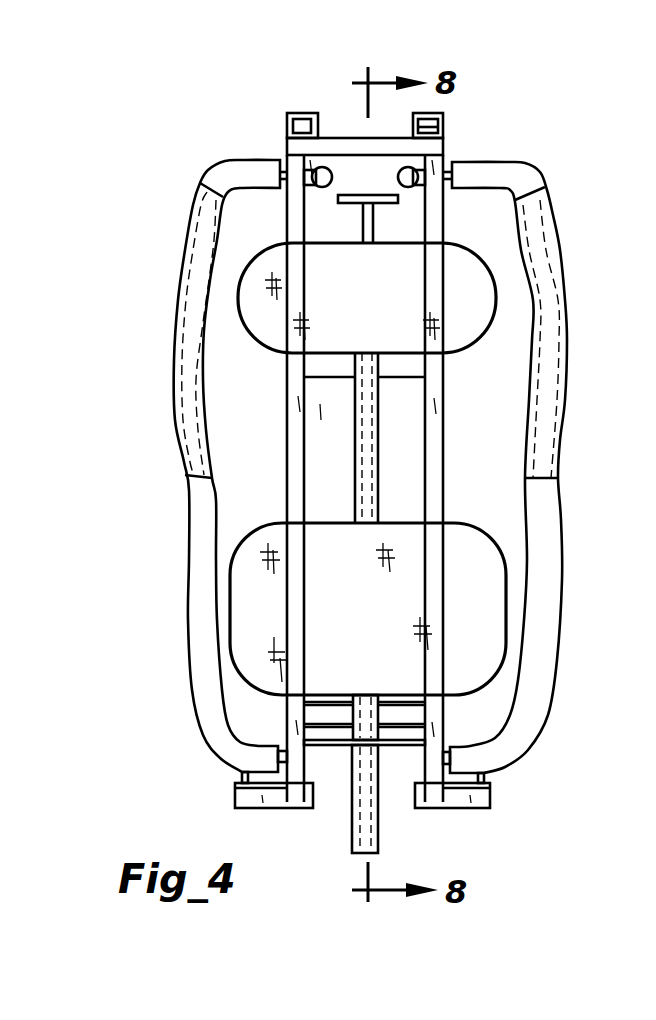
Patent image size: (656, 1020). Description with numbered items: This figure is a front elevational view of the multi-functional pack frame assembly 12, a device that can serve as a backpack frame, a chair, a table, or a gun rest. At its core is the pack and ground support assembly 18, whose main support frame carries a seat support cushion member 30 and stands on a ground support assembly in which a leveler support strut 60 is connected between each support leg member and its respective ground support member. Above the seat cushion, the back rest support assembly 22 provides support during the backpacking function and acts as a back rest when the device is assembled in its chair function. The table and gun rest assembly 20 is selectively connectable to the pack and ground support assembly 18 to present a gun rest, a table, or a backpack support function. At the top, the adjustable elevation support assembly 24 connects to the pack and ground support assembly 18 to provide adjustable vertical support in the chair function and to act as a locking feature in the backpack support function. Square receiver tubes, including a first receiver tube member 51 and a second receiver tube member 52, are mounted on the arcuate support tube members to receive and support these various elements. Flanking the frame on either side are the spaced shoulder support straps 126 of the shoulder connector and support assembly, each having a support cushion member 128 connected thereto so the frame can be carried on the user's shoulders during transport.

The multi-functional pack frame assembly 12 is at (583, 234).
The pack and ground support assembly 18 is at (478, 518).
The table and gun rest assembly 20 is at (342, 437).
The back rest support assembly 22 is at (510, 289).
The adjustable elevation support assembly 24 is at (362, 188).
The seat support cushion member 30 is at (502, 563).
The first receiver tube member 51 is at (297, 113).
The second receiver tube member 52 is at (446, 131).
The leveler support strut 60 is at (242, 777).
The shoulder support straps 126 is at (196, 545).
The support cushion member 128 is at (188, 423).